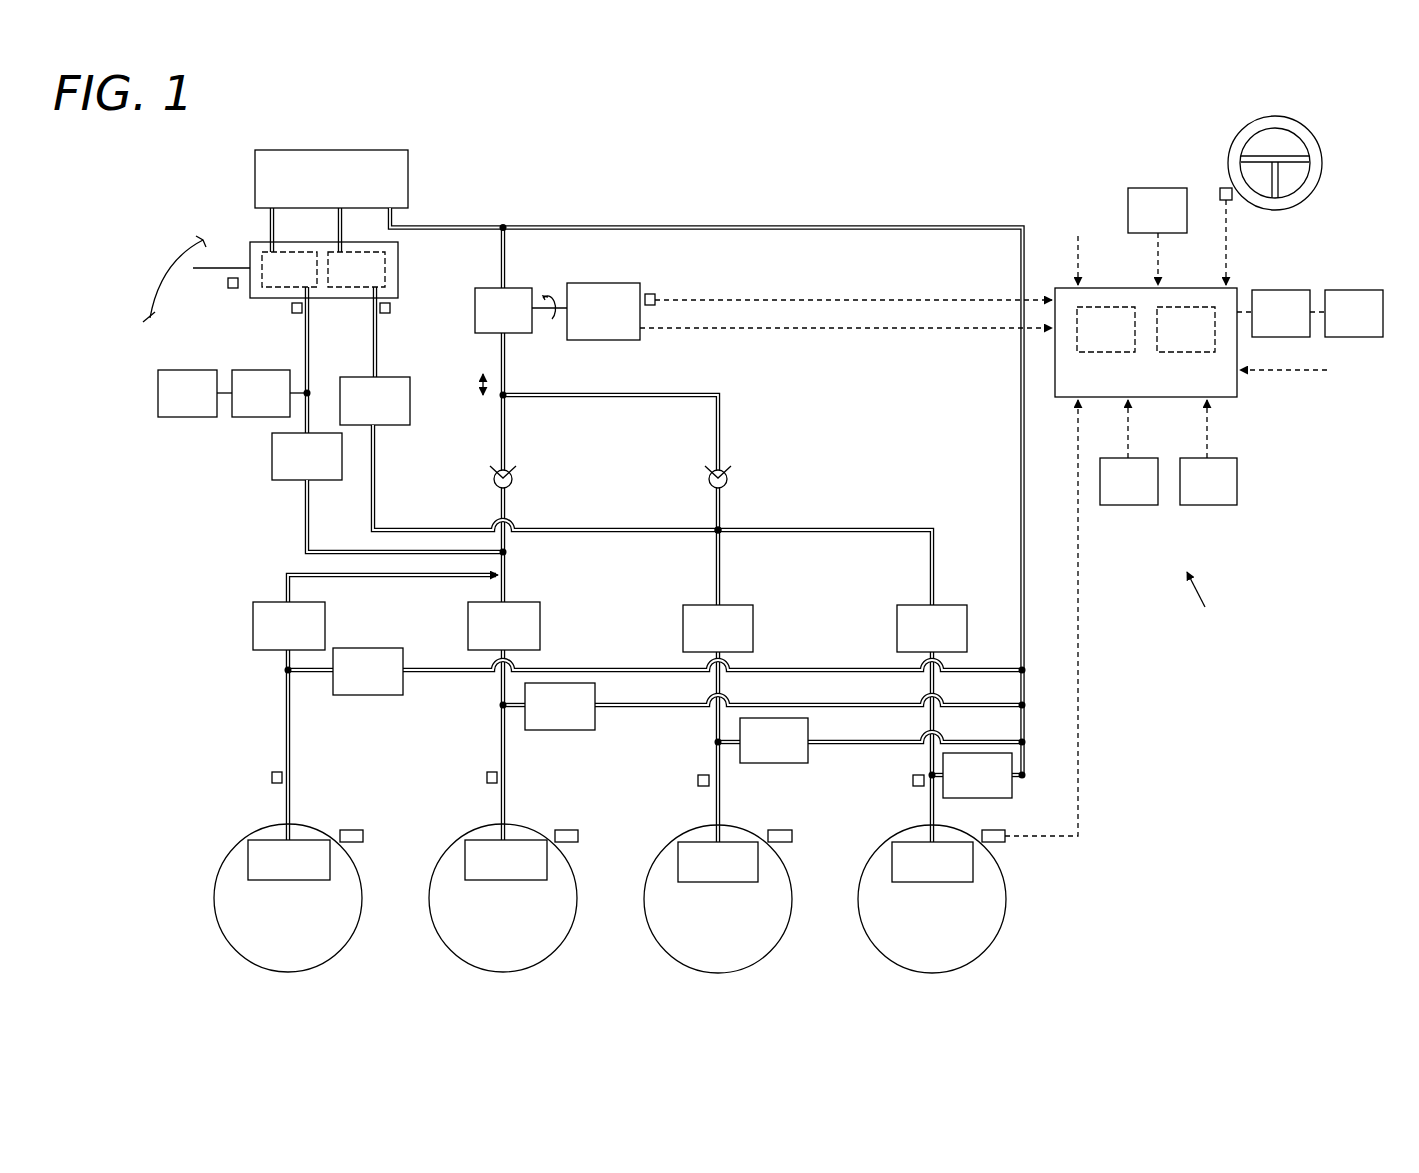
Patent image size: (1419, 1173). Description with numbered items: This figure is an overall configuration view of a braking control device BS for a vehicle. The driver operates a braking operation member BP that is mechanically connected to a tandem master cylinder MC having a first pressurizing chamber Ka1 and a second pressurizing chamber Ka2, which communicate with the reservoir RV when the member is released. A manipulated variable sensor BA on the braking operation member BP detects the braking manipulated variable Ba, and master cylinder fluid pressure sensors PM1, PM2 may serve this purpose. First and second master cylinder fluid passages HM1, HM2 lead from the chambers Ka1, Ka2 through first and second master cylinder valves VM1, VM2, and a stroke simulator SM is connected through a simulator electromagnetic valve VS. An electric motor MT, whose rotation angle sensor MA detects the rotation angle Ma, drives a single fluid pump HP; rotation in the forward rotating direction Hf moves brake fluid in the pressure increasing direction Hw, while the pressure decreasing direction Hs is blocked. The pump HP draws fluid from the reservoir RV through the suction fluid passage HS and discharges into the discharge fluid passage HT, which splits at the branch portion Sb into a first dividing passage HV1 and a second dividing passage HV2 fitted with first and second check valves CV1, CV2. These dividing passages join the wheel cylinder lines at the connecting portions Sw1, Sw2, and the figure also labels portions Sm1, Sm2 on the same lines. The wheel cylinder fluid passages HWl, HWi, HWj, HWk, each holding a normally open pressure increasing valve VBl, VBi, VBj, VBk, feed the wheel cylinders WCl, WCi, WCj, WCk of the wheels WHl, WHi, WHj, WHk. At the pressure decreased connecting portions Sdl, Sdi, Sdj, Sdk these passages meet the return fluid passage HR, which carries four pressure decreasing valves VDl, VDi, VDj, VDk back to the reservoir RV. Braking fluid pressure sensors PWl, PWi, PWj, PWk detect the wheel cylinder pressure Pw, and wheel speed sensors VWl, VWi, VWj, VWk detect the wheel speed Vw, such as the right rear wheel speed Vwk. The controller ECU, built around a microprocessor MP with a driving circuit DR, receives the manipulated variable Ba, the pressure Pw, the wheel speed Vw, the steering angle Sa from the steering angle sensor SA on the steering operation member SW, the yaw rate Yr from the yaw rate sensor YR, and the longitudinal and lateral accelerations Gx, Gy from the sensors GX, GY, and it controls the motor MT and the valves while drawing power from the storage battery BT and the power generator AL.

The reservoir RV is at (331, 201).
The master cylinder MC is at (398, 262).
The first pressurizing chamber Ka1 is at (289, 269).
The second pressurizing chamber Ka2 is at (356, 269).
The braking operation member BP is at (155, 300).
The manipulated variable sensor BA is at (228, 290).
The first master cylinder fluid pressure sensor PM1 is at (292, 310).
The second master cylinder fluid pressure sensor PM2 is at (395, 310).
The stroke simulator SM is at (195, 393).
The simulator electromagnetic valve VS is at (271, 393).
The first master cylinder valve VM1 is at (307, 383).
The second master cylinder valve VM2 is at (375, 356).
The first master cylinder fluid passage HM1 is at (305, 500).
The second master cylinder fluid passage HM2 is at (468, 525).
The return fluid passage HR is at (745, 224).
The suction fluid passage HS is at (500, 236).
The fluid pump HP is at (521, 310).
The electric motor MT is at (603, 311).
The forward rotating direction Hf is at (554, 268).
The rotation angle sensor MA is at (660, 292).
The rotation angle Ma is at (846, 297).
The pressure decreasing direction Hs is at (477, 366).
The pressure increasing direction Hw is at (472, 417).
The discharge fluid passage HT is at (507, 363).
The first dividing passage HV1 is at (500, 430).
The second dividing passage HV2 is at (677, 393).
The branch portion Sb is at (507, 398).
The first check valve CV1 is at (512, 470).
The second check valve CV2 is at (712, 470).
The first master connection portion Sm1 is at (507, 555).
The second master connection portion Sm2 is at (722, 527).
The first connecting portion Sw1 is at (496, 580).
The second connecting portion Sw2 is at (800, 514).
The left rear pressure increasing linear electromagnetic valve VBl is at (289, 626).
The right front pressure increasing linear electromagnetic valve VBi is at (504, 626).
The left front pressure increasing linear electromagnetic valve VBj is at (718, 628).
The right rear pressure increasing linear electromagnetic valve VBk is at (932, 628).
The left rear pressure decreasing linear electromagnetic valve VDl is at (655, 671).
The right front pressure decreasing linear electromagnetic valve VDi is at (762, 706).
The left front pressure decreasing linear electromagnetic valve VDj is at (870, 740).
The right rear pressure decreasing linear electromagnetic valve VDk is at (977, 775).
The left rear pressure decreased connecting portion Sdl is at (285, 672).
The right front pressure decreased connecting portion Sdi is at (500, 704).
The left front pressure decreased connecting portion Sdj is at (715, 741).
The right rear pressure decreased connecting portion Sdk is at (928, 773).
The left rear wheel cylinder fluid passage HWl is at (286, 720).
The right front wheel cylinder fluid passage HWi is at (500, 720).
The left front wheel cylinder fluid passage HWj is at (712, 549).
The right rear wheel cylinder fluid passage HWk is at (928, 549).
The left rear braking fluid pressure sensor PWl is at (272, 778).
The right front braking fluid pressure sensor PWi is at (487, 778).
The left front braking fluid pressure sensor PWj is at (698, 781).
The right rear braking fluid pressure sensor PWk is at (913, 781).
The left rear wheel speed sensor VWl is at (365, 830).
The right front wheel speed sensor VWi is at (580, 830).
The left front wheel speed sensor VWj is at (795, 830).
The right rear wheel speed sensor VWk is at (1008, 830).
The right rear wheel speed Vwk is at (1081, 618).
The wheel speed Vw is at (1130, 712).
The left rear wheel cylinder WCl is at (289, 860).
The right front wheel cylinder WCi is at (506, 860).
The left front wheel cylinder WCj is at (718, 862).
The right rear wheel cylinder WCk is at (932, 862).
The left rear wheel WHl is at (288, 898).
The right front wheel WHi is at (503, 898).
The left front wheel WHj is at (718, 899).
The right rear wheel WHk is at (932, 899).
The electronic control unit ECU is at (1146, 342).
The driving circuit DR is at (1106, 329).
The microprocessor MP is at (1186, 329).
The storage battery BT is at (1273, 313).
The power generator AL is at (1346, 313).
The yaw rate sensor YR is at (1157, 210).
The yaw rate Yr is at (1139, 259).
The steering angle sensor SA is at (1223, 188).
The steering angle Sa is at (1247, 242).
The steering operation member SW is at (1292, 132).
The braking fluid pressure Pw is at (1079, 244).
The braking manipulated variable Ba is at (1328, 402).
The longitudinal acceleration sensor GX is at (1129, 481).
The lateral acceleration sensor GY is at (1208, 481).
The longitudinal acceleration Gx is at (1150, 429).
The lateral acceleration Gy is at (1229, 429).
The braking control device BS is at (1209, 608).